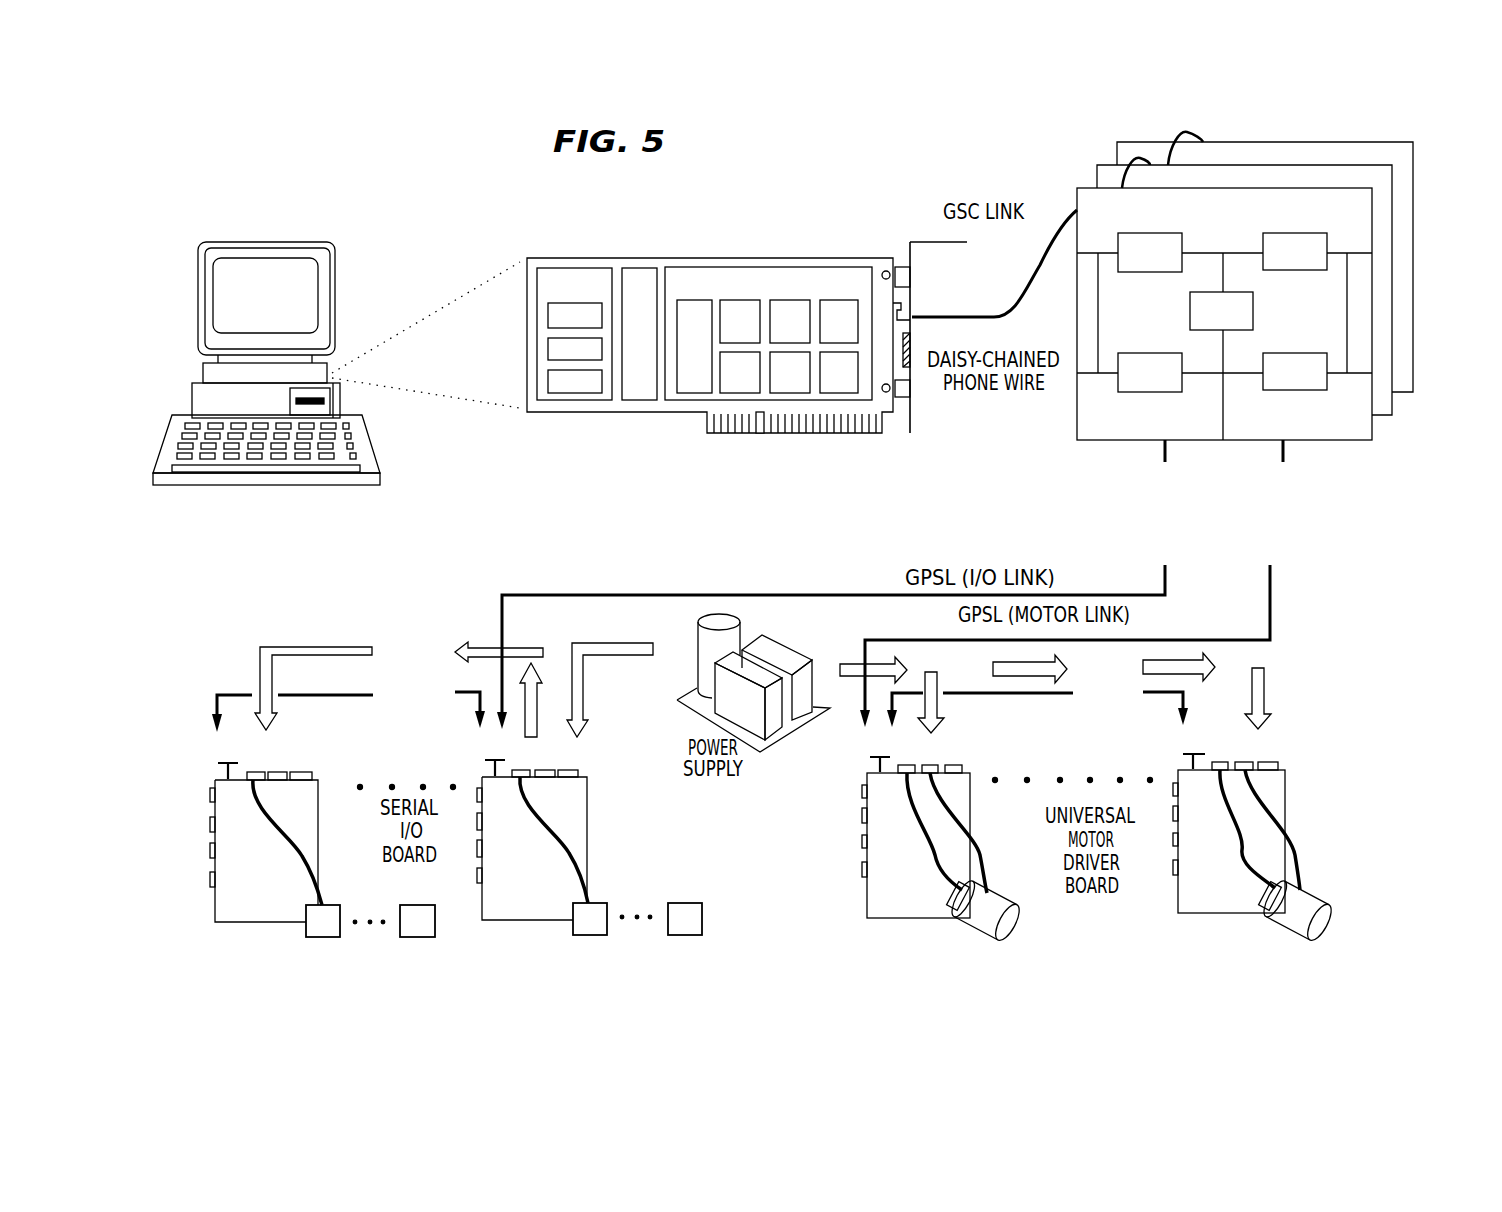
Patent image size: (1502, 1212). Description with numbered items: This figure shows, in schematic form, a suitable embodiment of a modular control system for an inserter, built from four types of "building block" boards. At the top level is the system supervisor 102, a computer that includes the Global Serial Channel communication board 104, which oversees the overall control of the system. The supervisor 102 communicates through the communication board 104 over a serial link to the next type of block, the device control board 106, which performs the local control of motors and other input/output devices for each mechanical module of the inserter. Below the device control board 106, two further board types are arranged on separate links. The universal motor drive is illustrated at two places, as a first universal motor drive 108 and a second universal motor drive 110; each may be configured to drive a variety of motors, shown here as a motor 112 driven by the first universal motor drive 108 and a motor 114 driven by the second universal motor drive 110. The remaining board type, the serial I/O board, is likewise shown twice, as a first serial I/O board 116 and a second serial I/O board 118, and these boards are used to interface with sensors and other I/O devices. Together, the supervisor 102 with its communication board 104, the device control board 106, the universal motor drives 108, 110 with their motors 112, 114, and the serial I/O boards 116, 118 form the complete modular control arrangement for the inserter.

The system supervisor 102 is at (364, 222).
The Global Serial Channel communication board 104 is at (746, 232).
The device control board 106 is at (1428, 276).
The universal motor drive 108 is at (814, 863).
The universal motor drive 110 is at (1325, 738).
The motor 112 is at (1020, 921).
The motor 114 is at (1327, 920).
The serial I/O board 116 is at (318, 793).
The serial I/O board 118 is at (587, 792).